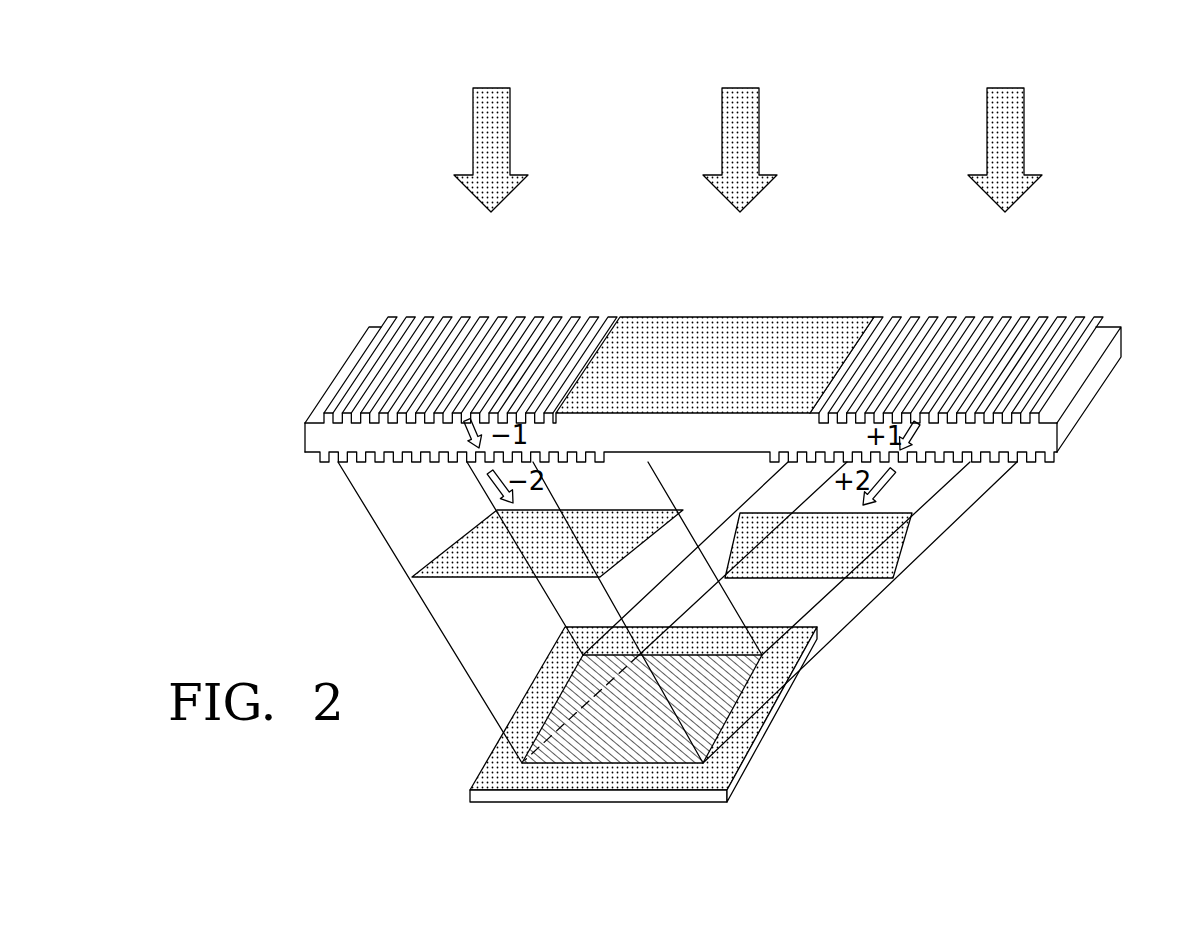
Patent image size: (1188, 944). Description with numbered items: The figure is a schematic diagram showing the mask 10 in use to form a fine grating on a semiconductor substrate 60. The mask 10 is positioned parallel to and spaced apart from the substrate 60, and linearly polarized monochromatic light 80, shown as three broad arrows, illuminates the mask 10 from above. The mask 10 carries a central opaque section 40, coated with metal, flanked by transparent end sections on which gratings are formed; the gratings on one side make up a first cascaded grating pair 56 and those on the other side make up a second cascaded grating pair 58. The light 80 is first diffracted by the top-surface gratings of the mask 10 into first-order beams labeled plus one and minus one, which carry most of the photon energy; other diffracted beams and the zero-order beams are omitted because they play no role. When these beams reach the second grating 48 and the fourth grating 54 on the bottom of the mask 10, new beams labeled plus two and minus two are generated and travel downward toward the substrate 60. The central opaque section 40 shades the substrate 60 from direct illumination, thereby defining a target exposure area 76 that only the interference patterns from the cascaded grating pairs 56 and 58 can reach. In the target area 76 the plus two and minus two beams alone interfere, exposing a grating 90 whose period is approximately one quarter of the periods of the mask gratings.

The mask 10 is at (340, 314).
The central opaque section 40 is at (775, 315).
The second grating 48 is at (412, 462).
The fourth grating 54 is at (1027, 463).
The first cascaded grating pair 56 is at (342, 386).
The second cascaded grating pair 58 is at (1063, 377).
The semiconductor substrate 60 is at (690, 758).
The target exposure area 76 is at (707, 692).
The linearly polarized monochromatic light 80 is at (722, 108).
The grating 90 is at (596, 755).